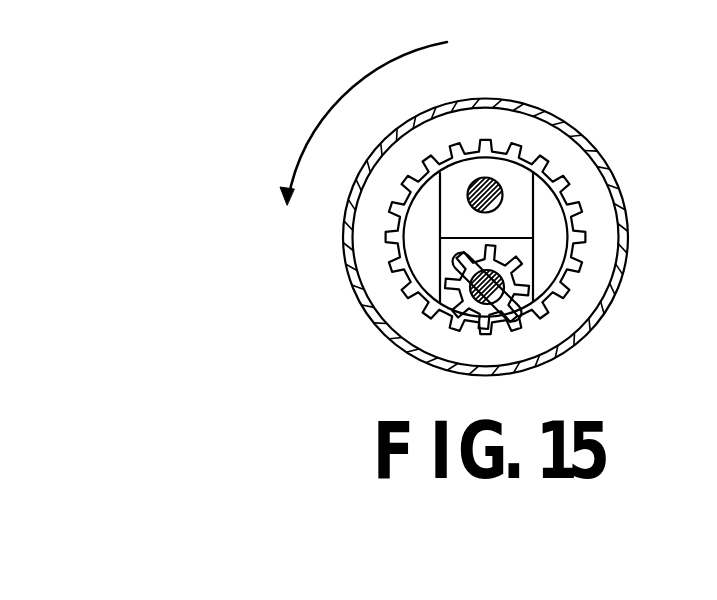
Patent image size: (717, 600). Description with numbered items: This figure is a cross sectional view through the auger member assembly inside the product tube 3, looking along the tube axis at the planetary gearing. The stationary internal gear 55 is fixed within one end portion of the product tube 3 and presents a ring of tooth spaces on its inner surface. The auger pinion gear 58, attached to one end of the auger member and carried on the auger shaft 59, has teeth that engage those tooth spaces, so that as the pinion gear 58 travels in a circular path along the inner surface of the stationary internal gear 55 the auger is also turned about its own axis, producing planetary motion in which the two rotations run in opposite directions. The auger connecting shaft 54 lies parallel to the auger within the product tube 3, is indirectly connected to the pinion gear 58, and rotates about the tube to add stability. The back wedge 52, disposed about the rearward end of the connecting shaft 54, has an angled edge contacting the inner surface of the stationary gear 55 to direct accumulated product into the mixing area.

The product tube 3 is at (563, 120).
The back wedge 52 is at (437, 214).
The auger connecting shaft 54 is at (503, 190).
The stationary internal gear 55 is at (543, 155).
The auger pinion gear 58 is at (512, 258).
The auger shaft 59 is at (507, 310).